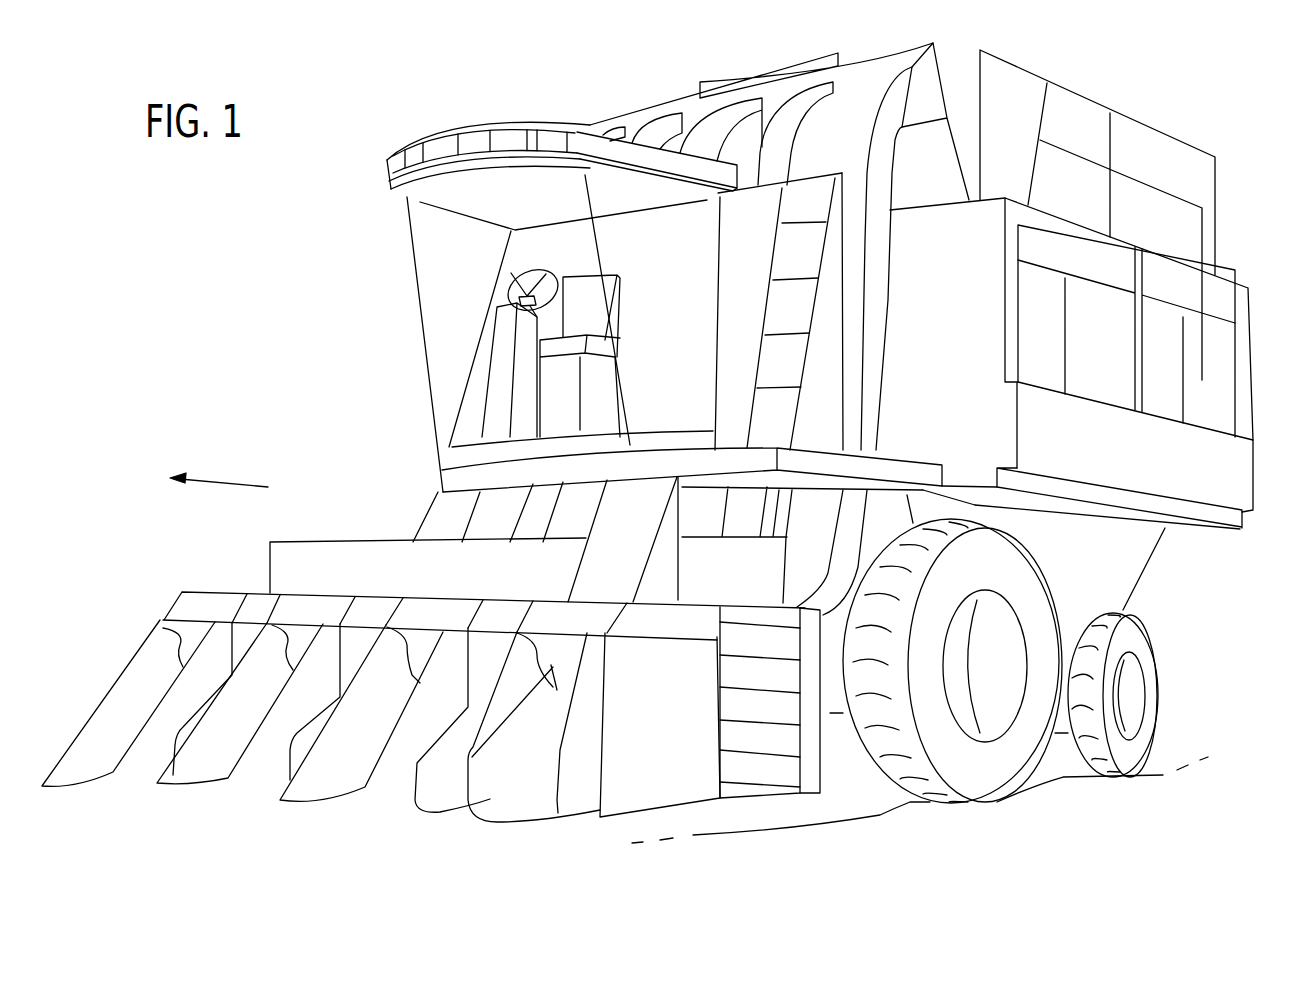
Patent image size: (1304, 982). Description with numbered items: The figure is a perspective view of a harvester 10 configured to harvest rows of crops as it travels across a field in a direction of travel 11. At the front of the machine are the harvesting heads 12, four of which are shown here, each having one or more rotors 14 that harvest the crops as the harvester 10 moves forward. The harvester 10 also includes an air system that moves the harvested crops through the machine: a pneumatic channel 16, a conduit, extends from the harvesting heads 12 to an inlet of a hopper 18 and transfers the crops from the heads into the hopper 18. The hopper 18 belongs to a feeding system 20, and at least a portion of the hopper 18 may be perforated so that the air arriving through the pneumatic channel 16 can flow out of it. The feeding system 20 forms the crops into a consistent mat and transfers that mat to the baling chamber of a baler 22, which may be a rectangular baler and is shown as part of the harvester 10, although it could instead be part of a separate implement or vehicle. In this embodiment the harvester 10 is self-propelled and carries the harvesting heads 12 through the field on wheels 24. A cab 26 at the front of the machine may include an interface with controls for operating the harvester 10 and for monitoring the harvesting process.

The harvester 10 is at (1084, 84).
The direction of travel 11 is at (222, 480).
The harvesting heads 12 is at (314, 589).
The rotors 14 is at (467, 797).
The pneumatic channel 16 is at (880, 343).
The hopper 18 is at (968, 48).
The feeding system 20 is at (873, 36).
The baler 22 is at (1231, 264).
The wheels 24 is at (1100, 770).
The cab 26 is at (475, 143).